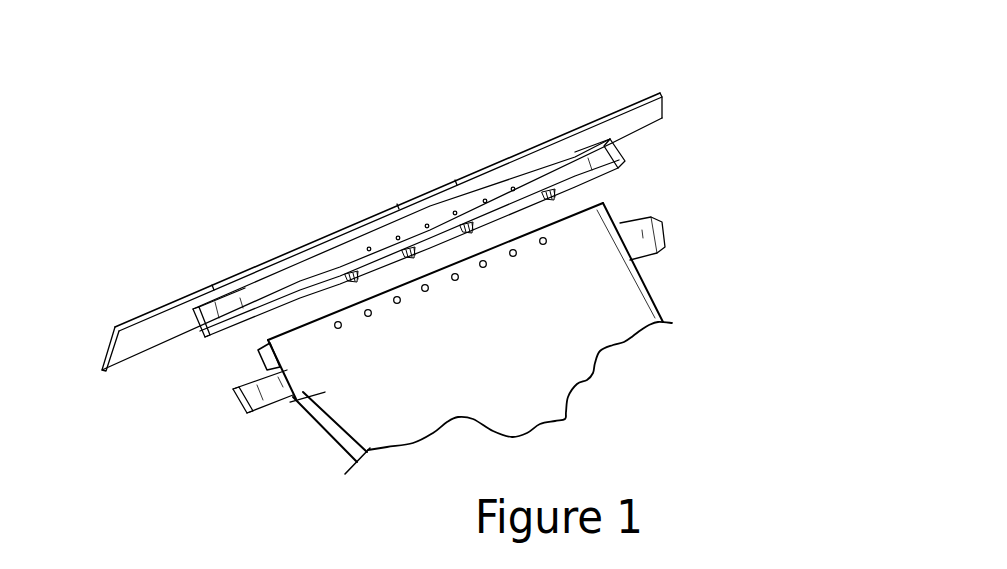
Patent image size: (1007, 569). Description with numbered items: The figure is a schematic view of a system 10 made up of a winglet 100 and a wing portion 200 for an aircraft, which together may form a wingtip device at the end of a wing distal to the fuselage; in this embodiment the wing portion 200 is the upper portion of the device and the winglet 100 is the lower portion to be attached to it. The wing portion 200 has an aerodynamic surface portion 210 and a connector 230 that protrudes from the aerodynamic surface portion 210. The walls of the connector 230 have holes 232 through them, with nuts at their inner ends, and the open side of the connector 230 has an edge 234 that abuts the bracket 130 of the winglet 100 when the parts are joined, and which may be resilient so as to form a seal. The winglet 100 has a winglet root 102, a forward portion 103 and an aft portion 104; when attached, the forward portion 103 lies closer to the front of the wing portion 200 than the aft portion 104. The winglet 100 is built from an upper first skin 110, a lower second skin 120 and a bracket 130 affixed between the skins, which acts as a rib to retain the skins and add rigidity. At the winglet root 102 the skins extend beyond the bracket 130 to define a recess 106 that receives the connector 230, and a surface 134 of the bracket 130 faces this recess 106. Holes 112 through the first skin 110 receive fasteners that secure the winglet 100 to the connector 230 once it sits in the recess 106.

The system 10 is at (623, 58).
The winglet 100 is at (689, 303).
The winglet root 102 is at (596, 212).
The forward portion 103 is at (372, 431).
The aft portion 104 is at (642, 290).
The recess 106 is at (262, 362).
The upper first skin 110 is at (290, 403).
The holes 112 is at (368, 318).
The lower second skin 120 is at (335, 438).
The bracket 130 is at (238, 404).
The surface of the bracket 134 is at (637, 211).
The wing portion 200 is at (700, 120).
The aerodynamic surface portion 210 is at (113, 354).
The connector 230 is at (205, 338).
The holes 232 is at (340, 262).
The edge of the open side 234 is at (601, 183).